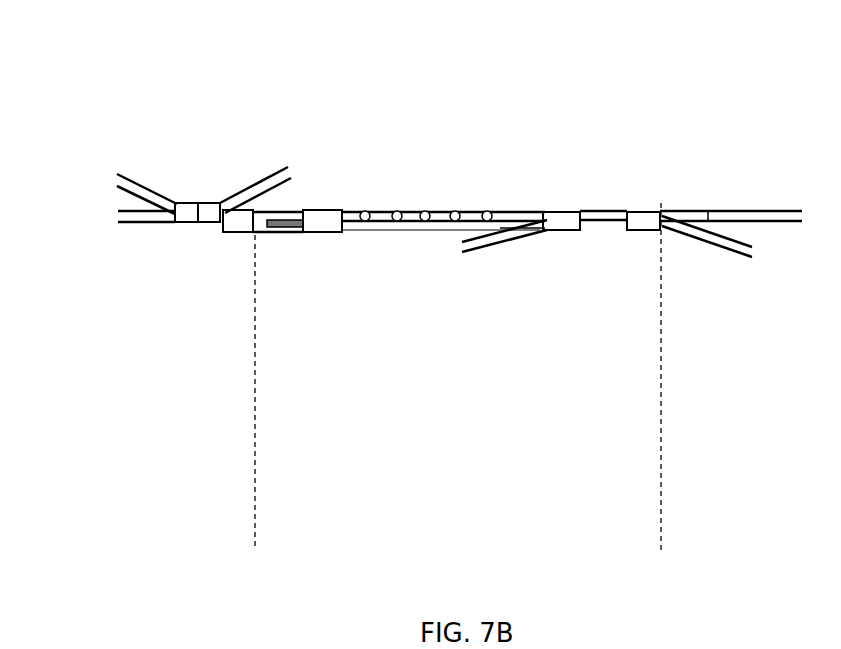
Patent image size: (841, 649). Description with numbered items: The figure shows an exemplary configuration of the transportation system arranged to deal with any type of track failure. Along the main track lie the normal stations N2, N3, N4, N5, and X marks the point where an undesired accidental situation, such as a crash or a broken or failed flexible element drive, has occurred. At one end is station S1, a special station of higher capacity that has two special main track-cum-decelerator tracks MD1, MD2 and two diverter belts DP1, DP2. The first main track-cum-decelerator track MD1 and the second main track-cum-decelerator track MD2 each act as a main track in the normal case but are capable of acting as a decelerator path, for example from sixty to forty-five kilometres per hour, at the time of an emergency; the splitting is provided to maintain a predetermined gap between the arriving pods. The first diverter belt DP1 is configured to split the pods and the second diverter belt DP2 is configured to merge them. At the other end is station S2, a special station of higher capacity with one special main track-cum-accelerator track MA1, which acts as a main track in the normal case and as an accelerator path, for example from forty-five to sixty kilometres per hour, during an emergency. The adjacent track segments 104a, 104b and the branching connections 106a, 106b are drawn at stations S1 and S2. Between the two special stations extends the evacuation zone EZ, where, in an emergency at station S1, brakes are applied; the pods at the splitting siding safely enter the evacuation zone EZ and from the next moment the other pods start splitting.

The station S1 is at (146, 138).
The station S2 is at (639, 161).
The first doped region 104a is at (356, 200).
The second doped region 104b is at (394, 218).
The first interconnect line 106a is at (332, 170).
The second interconnect line 106b is at (495, 213).
The first diverter belt DP1 is at (155, 276).
The second diverter belt DP2 is at (200, 327).
The first main track-cum-decelerator track MD1 is at (180, 295).
The second main track-cum-decelerator track MD2 is at (180, 315).
The main track-cum-accelerator track MA1 is at (466, 191).
The station N2 is at (303, 144).
The station N3 is at (330, 131).
The station N4 is at (518, 119).
The station N5 is at (540, 134).
The point X is at (363, 117).
The evacuation zone EZ is at (659, 522).